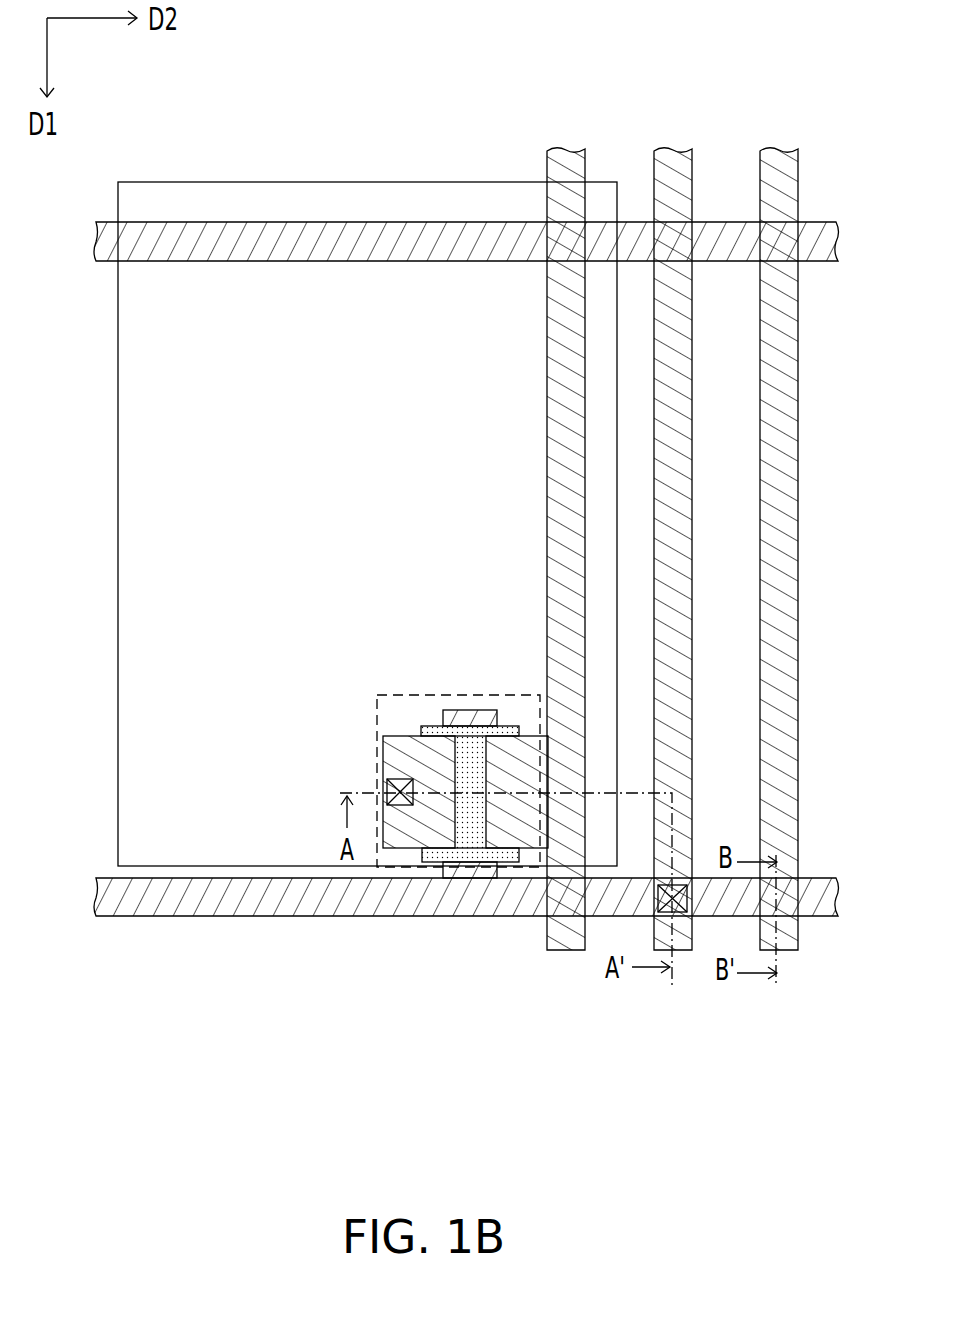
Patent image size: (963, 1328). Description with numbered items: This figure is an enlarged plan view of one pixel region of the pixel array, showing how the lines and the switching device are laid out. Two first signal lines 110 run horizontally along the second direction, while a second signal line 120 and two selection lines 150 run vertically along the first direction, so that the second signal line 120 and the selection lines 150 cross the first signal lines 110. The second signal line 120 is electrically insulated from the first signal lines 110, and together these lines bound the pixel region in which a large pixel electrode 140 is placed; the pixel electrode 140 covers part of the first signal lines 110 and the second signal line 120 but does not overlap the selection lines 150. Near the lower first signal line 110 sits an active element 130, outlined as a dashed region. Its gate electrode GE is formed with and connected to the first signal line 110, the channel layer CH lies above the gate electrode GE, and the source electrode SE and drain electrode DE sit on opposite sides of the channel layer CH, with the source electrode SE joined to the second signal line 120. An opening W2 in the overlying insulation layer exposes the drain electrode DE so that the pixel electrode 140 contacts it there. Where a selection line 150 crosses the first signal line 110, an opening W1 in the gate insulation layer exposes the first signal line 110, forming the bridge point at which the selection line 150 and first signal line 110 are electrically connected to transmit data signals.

The first signal line 110 is at (108, 241).
The second signal line 120 is at (567, 940).
The active element 130 is at (420, 809).
The pixel electrode 140 is at (133, 593).
The selection line 150 is at (687, 951).
The gate electrode GE is at (473, 872).
The channel layer CH is at (443, 862).
The drain electrode DE is at (400, 833).
The source electrode SE is at (513, 836).
The opening W1 is at (688, 901).
The opening W2 is at (388, 788).